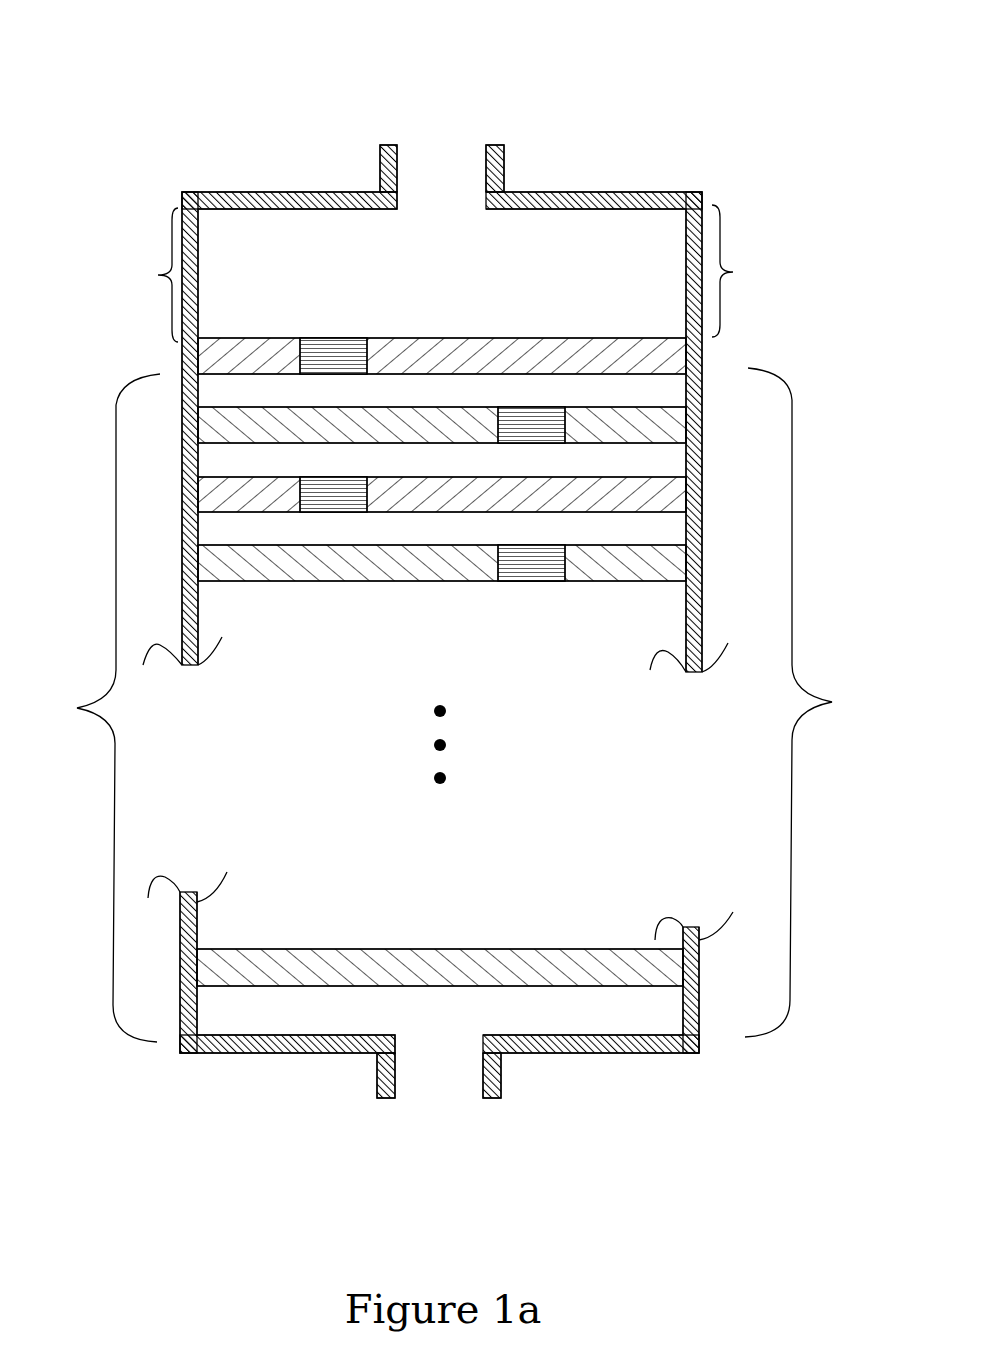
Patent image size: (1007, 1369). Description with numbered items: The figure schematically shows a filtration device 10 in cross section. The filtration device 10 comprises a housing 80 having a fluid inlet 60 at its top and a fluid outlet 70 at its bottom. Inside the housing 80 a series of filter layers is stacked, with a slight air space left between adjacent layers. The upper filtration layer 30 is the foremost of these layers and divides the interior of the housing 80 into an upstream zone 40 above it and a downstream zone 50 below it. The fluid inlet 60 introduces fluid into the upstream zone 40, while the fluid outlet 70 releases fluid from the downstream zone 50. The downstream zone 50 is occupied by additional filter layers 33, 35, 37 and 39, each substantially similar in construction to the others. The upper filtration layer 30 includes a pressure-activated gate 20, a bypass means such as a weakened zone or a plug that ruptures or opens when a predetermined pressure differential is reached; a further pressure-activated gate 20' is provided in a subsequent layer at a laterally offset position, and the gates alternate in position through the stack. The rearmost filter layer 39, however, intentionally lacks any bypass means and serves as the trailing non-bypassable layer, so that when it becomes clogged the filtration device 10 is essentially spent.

The filtration device 10 is at (452, 607).
The pressure-activated gate 20 is at (333, 396).
The pressure-activated gate 20' is at (446, 462).
The upper filtration layer 30 is at (425, 338).
The filter layer 33 is at (702, 418).
The filter layer 35 is at (702, 488).
The filter layer 37 is at (672, 560).
The rearmost filter layer 39 is at (676, 962).
The upstream zone 40 is at (443, 273).
The downstream zone 50 is at (452, 705).
The fluid inlet 60 is at (445, 158).
The fluid outlet 70 is at (443, 1065).
The housing 80 is at (573, 192).